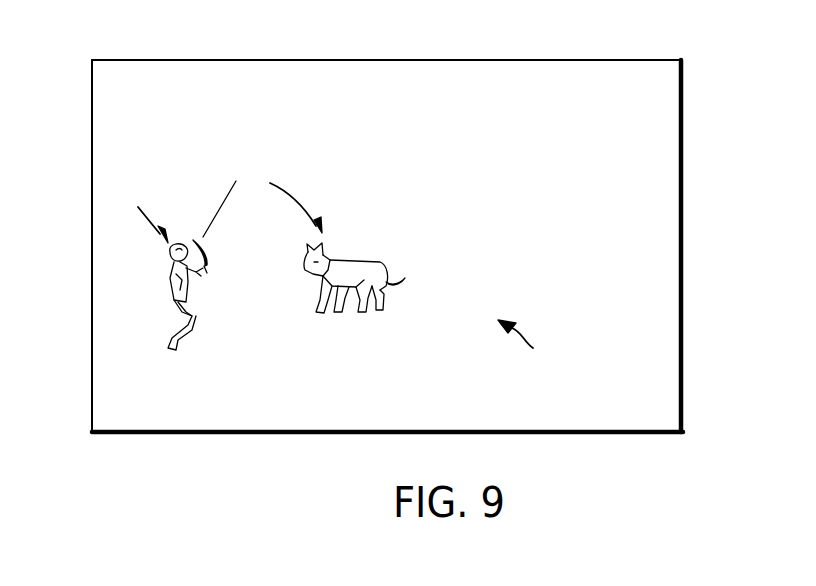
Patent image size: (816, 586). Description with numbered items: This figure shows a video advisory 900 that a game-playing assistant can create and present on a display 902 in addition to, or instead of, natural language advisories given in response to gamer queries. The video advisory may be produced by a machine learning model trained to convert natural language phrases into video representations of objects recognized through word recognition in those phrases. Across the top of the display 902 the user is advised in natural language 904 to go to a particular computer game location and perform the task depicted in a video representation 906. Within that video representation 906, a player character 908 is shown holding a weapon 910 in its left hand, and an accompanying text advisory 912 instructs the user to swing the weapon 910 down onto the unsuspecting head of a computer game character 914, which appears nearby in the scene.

The video advisory 900 is at (235, 92).
The display 902 is at (684, 246).
The natural language 904 is at (586, 105).
The video representation 906 is at (541, 343).
The player character 908 is at (173, 349).
The weapon 910 is at (208, 266).
The text advisory 912 is at (492, 195).
The computer game character 914 is at (345, 314).